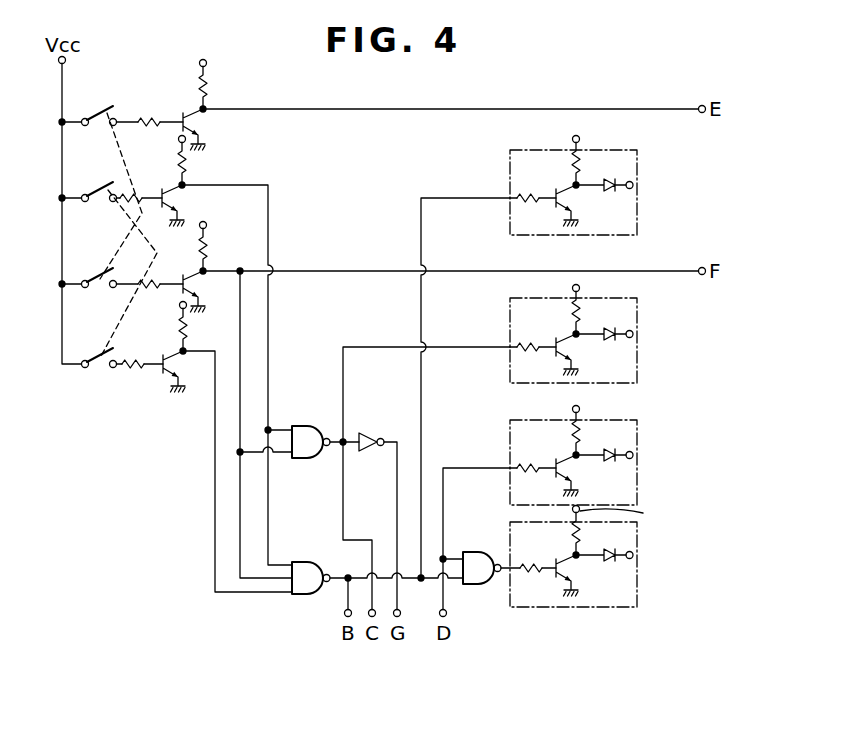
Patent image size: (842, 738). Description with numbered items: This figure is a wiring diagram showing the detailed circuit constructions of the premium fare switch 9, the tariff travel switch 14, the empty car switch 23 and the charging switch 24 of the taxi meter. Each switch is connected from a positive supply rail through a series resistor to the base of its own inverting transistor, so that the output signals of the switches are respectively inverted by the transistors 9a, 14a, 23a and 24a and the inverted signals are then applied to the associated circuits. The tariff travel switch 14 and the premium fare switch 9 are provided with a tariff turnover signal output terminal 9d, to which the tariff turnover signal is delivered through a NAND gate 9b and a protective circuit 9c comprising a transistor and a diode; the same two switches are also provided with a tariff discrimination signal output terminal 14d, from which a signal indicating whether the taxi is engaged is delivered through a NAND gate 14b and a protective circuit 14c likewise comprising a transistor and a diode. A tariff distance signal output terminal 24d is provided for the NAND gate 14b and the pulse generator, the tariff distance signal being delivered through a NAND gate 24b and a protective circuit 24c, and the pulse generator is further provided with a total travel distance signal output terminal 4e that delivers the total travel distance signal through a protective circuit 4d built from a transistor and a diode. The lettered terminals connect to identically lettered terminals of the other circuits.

The empty car switch 23 is at (103, 113).
The tariff travel switch 14 is at (100, 190).
The premium fare switch 9 is at (97, 275).
The charging switch 24 is at (100, 355).
The transistor 23a is at (201, 122).
The transistor 14a is at (180, 200).
The transistor 9a is at (200, 287).
The transistor 24a is at (198, 376).
The NAND gate 9b is at (311, 426).
The NAND gate 14b is at (312, 562).
The NAND gate 24b is at (478, 552).
The protective circuit 14c is at (510, 215).
The protective circuit 9c is at (510, 318).
The protective circuit 4d is at (510, 438).
The protective circuit 24c is at (575, 608).
The tariff discrimination signal output terminal 14d is at (638, 186).
The tariff turnover signal output terminal 9d is at (631, 334).
The total travel distance signal output terminal 4e is at (631, 455).
The tariff distance signal output terminal 24d is at (638, 555).